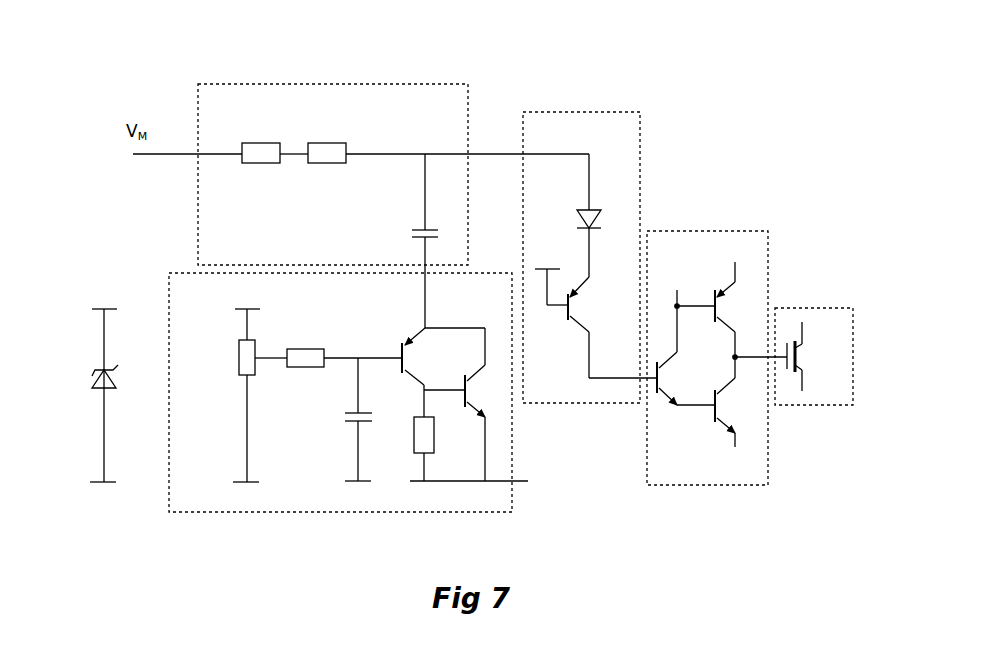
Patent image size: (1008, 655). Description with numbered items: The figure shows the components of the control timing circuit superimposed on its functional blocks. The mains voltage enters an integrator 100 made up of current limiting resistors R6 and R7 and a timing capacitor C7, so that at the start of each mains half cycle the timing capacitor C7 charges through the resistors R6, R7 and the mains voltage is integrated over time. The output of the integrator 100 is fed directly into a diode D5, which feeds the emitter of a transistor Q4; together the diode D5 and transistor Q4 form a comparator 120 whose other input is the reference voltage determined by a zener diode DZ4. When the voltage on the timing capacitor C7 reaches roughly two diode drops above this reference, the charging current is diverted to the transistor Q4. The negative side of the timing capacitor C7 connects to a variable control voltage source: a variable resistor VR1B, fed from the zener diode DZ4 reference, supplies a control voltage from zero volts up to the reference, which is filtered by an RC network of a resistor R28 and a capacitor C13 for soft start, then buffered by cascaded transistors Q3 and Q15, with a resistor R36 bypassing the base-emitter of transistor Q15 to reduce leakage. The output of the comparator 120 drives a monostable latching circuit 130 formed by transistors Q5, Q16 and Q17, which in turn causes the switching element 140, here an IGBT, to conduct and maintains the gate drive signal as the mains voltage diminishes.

The integrator 100 is at (393, 174).
The comparator 120 is at (590, 226).
The monostable latching circuit 130 is at (707, 324).
The switching element 140 is at (808, 336).
The resistor R6 is at (261, 142).
The resistor R7 is at (327, 142).
The timing capacitor C7 is at (410, 241).
The diode D5 is at (604, 215).
The transistor Q4 is at (595, 312).
The zener diode DZ4 is at (82, 399).
The variable resistor VR1B is at (232, 399).
The resistor R28 is at (344, 347).
The capacitor C13 is at (338, 419).
The transistor Q3 is at (443, 372).
The resistor R36 is at (442, 449).
The transistor Q15 is at (485, 404).
The transistor Q16 is at (686, 347).
The transistor Q5 is at (730, 320).
The transistor Q17 is at (736, 412).
The element IGBT is at (788, 356).